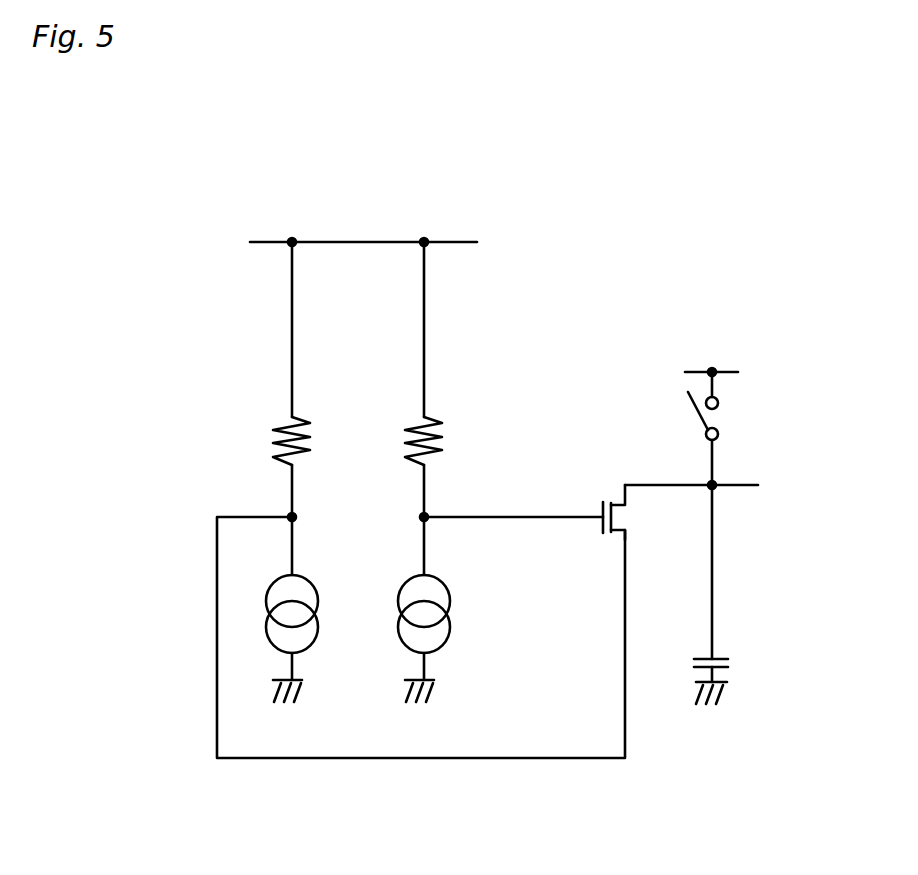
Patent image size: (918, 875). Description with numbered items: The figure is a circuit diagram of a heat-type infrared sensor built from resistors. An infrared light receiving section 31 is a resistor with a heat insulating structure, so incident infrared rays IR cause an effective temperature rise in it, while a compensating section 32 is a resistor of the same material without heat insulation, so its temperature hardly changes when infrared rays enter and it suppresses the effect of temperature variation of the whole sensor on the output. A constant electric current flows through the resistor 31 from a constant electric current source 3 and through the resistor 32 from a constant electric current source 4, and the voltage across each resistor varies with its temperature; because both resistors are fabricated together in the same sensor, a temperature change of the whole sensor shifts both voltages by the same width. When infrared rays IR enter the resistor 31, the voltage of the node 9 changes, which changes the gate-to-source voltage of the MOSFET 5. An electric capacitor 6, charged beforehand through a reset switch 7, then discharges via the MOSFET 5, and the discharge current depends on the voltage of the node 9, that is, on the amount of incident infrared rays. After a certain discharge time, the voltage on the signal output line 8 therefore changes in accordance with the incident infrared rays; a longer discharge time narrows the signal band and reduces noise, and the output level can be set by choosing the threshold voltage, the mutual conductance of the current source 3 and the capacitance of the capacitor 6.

The compensating section 32 is at (283, 420).
The infrared light receiving section 31 is at (447, 422).
The constant electric current source 4 is at (246, 610).
The constant electric current source 3 is at (453, 585).
The node 9 is at (433, 527).
The MOSFET 5 is at (617, 485).
The signal output line 8 is at (753, 478).
The reset switch 7 is at (737, 405).
The electric capacitor 6 is at (718, 645).
The reference current IR is at (452, 451).